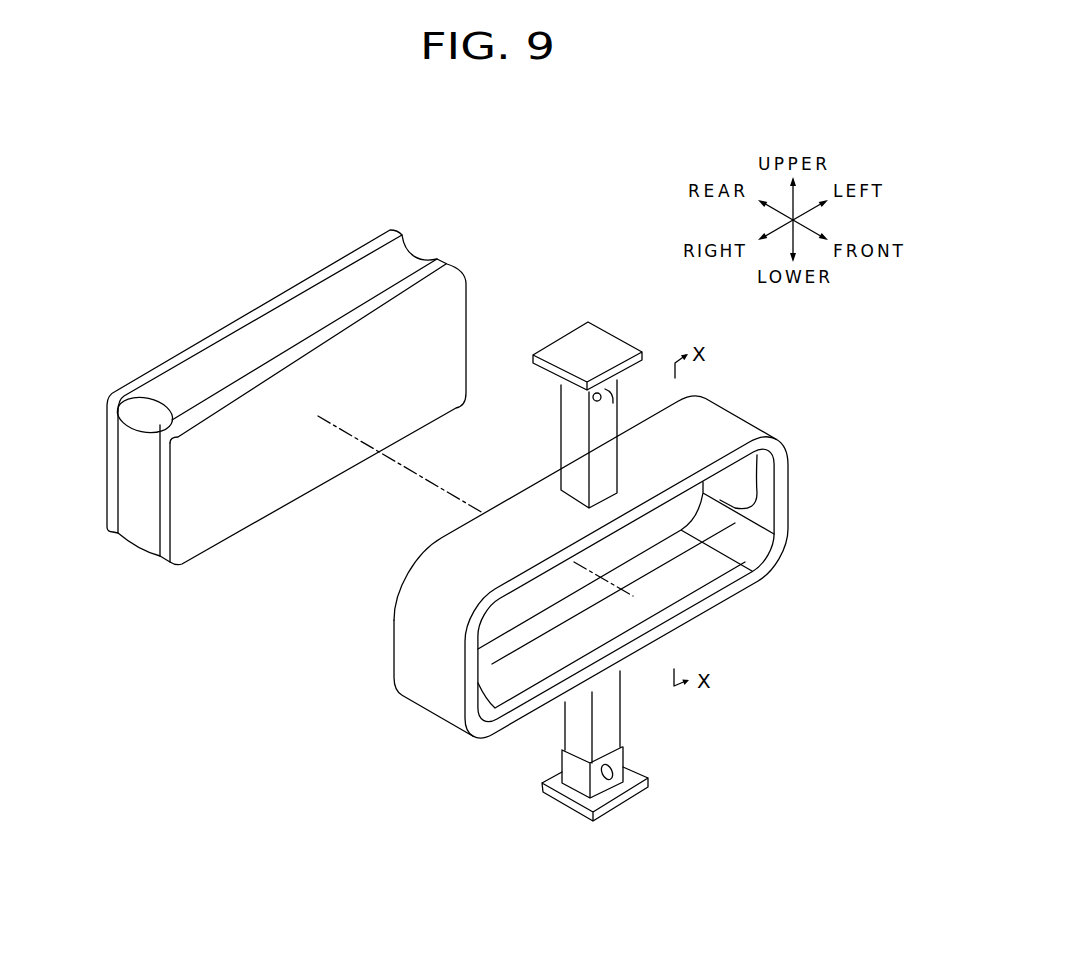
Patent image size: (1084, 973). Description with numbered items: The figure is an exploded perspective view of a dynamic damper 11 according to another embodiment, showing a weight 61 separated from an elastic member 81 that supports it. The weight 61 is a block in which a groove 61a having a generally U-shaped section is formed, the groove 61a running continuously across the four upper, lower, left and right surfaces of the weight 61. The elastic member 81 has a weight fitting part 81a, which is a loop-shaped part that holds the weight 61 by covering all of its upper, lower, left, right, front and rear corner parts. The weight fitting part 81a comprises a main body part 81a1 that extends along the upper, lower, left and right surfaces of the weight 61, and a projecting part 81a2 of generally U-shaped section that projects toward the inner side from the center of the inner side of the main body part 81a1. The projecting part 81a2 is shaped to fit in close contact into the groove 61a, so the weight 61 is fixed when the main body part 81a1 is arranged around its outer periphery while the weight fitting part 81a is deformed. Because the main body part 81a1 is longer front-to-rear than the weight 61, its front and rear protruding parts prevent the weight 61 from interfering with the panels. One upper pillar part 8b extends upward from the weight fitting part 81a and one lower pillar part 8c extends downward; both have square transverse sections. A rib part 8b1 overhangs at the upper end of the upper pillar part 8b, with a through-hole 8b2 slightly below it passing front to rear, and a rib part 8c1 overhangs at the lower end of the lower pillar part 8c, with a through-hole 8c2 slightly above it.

The dynamic damper 11 is at (574, 249).
The weight 61 is at (286, 381).
The groove 61a is at (357, 290).
The upper pillar part 8b is at (563, 399).
The rib part 8b1 is at (581, 347).
The through-hole 8b2 is at (592, 395).
The elastic member 81 is at (638, 545).
The weight fitting part 81a is at (790, 497).
The main body part 81a1 is at (771, 561).
The projecting part 81a2 is at (670, 583).
The lower pillar part 8c is at (593, 758).
The rib part 8c1 is at (562, 808).
The through-hole 8c2 is at (612, 768).